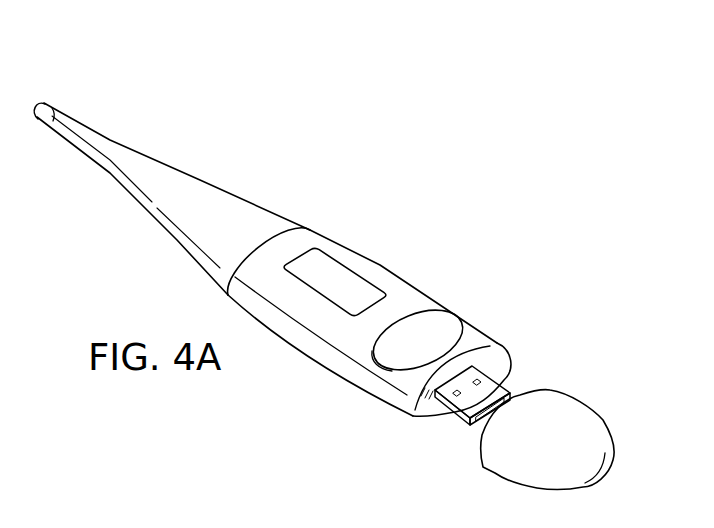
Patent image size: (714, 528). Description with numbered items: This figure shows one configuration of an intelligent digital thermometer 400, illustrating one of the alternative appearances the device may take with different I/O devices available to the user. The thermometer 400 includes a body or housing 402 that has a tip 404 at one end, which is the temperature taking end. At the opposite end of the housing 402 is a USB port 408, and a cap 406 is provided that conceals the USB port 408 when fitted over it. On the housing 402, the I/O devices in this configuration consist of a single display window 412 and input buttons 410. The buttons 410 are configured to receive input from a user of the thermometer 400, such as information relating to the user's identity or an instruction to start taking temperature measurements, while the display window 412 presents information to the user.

The thermometer 400 is at (502, 217).
The body or housing 402 is at (250, 212).
The tip 404 is at (47, 107).
The cap 406 is at (577, 413).
The USB port 408 is at (488, 390).
The input buttons 410 is at (413, 338).
The display window 412 is at (340, 278).